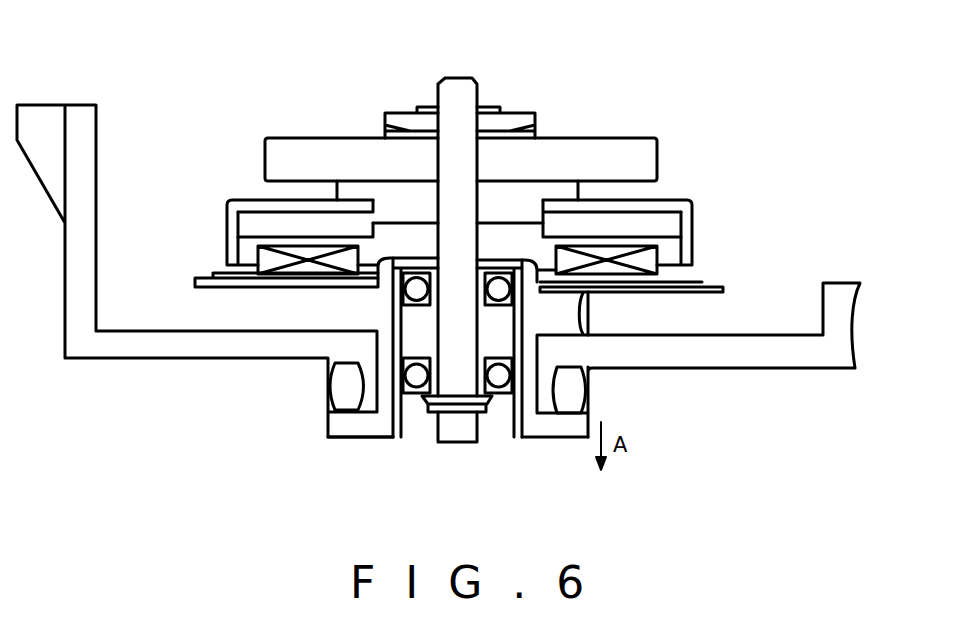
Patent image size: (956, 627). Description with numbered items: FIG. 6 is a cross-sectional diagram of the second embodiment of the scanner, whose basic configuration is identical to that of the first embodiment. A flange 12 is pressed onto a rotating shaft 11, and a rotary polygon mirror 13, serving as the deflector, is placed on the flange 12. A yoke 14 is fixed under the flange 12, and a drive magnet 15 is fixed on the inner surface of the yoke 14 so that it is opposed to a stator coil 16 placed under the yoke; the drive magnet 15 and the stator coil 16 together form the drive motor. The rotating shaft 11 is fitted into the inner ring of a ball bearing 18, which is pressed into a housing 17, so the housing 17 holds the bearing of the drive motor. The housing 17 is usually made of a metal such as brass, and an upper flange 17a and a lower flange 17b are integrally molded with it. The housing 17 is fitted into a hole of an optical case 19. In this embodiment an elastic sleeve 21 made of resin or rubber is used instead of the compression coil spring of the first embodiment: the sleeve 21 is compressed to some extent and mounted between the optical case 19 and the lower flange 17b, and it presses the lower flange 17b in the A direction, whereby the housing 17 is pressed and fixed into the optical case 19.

The rotating shaft 11 is at (450, 85).
The flange 12 is at (523, 198).
The rotary polygon mirror 13 is at (622, 153).
The yoke 14 is at (695, 227).
The drive magnet 15 is at (640, 225).
The stator coil 16 is at (667, 258).
The housing 17 is at (333, 292).
The upper flange 17a is at (572, 316).
The lower flange 17b is at (557, 423).
The ball bearing 18 is at (420, 378).
The optical case 19 is at (801, 355).
The elastic sleeve 21 is at (572, 396).